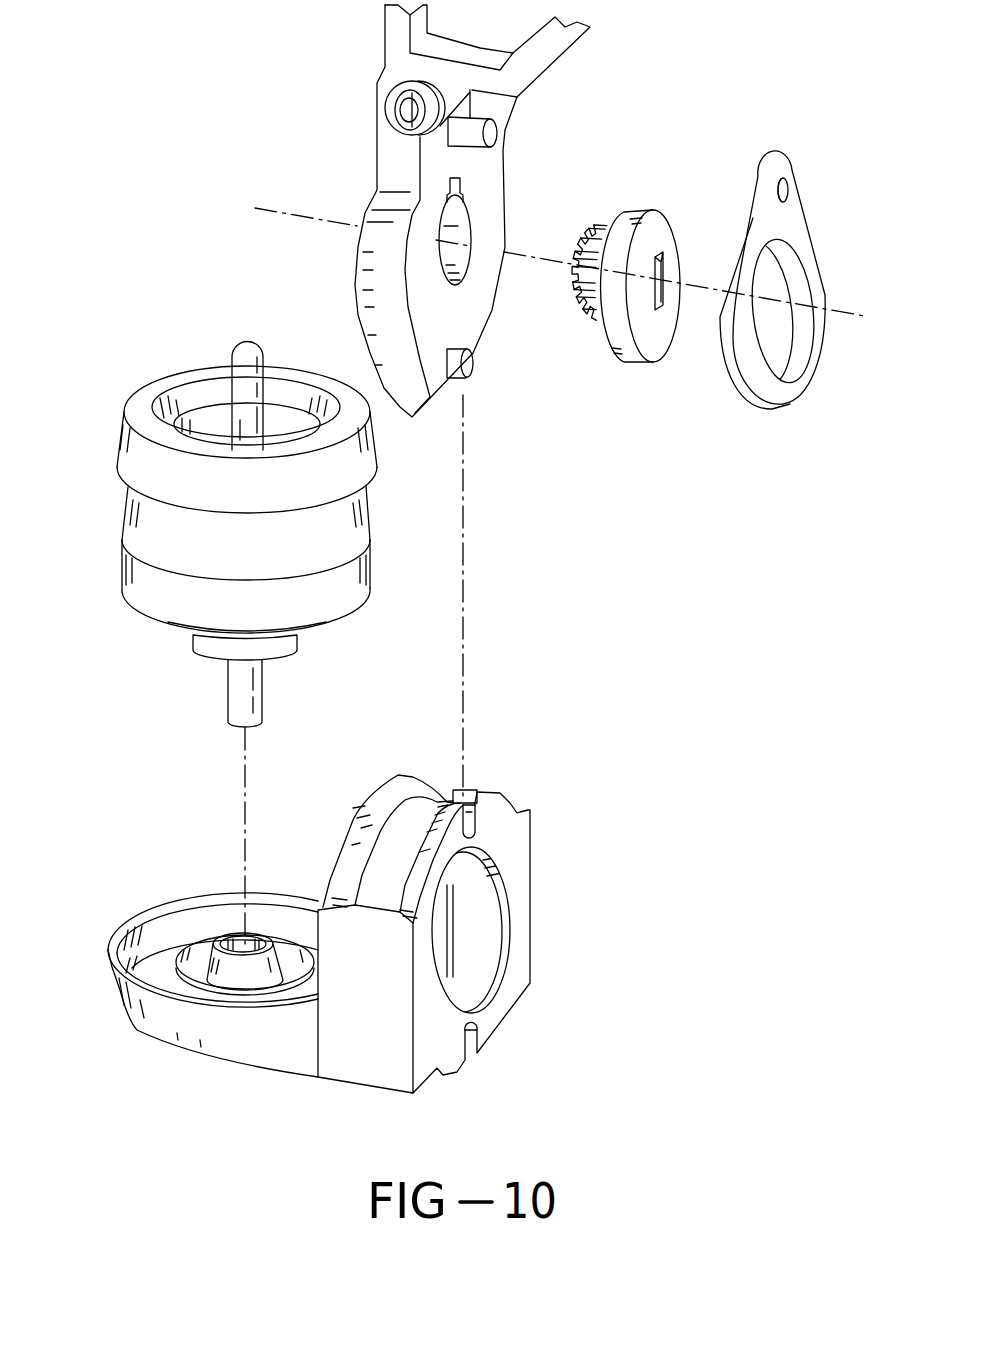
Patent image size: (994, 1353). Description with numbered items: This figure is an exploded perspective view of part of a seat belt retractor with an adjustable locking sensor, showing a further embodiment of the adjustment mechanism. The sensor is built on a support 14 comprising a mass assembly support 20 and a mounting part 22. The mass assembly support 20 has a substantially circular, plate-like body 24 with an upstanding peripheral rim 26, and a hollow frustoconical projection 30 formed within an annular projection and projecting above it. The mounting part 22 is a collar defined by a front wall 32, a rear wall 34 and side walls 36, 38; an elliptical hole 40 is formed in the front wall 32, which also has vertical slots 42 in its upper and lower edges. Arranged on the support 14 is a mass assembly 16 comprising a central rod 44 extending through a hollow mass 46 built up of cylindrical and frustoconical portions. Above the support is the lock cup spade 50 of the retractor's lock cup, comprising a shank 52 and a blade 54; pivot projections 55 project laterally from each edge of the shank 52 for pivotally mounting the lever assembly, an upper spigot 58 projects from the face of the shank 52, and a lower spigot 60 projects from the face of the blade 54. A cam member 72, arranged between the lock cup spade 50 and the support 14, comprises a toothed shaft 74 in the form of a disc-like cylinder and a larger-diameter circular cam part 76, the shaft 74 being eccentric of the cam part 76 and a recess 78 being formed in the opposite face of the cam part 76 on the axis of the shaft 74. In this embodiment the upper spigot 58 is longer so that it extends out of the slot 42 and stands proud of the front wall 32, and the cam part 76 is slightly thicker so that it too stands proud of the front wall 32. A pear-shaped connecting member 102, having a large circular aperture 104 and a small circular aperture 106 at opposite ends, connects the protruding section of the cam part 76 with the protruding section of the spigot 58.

The support 14 is at (557, 879).
The mass assembly 16 is at (378, 551).
The mass assembly support 20 is at (285, 1050).
The mounting part 22 is at (362, 1067).
The body 24 is at (158, 1020).
The peripheral rim 26 is at (138, 918).
The frustoconical projection 30 is at (232, 940).
The front wall 32 is at (500, 995).
The rear wall 34 is at (415, 790).
The side wall 36 is at (383, 1078).
The side wall 38 is at (468, 913).
The elliptical hole 40 is at (500, 870).
The vertical slot 42 is at (467, 795).
The central rod 44 is at (262, 695).
The hollow mass 46 is at (133, 516).
The lock cup spade 50 is at (507, 164).
The shank 52 is at (390, 165).
The blade 54 is at (493, 310).
The pivot projection 55 is at (410, 108).
The upper spigot 58 is at (494, 133).
The lower spigot 60 is at (470, 365).
The cam member 72 is at (655, 200).
The toothed shaft 74 is at (600, 226).
The cam part 76 is at (650, 340).
The recess 78 is at (660, 265).
The connecting member 102 is at (738, 410).
The large circular aperture 104 is at (790, 345).
The small circular aperture 106 is at (787, 185).